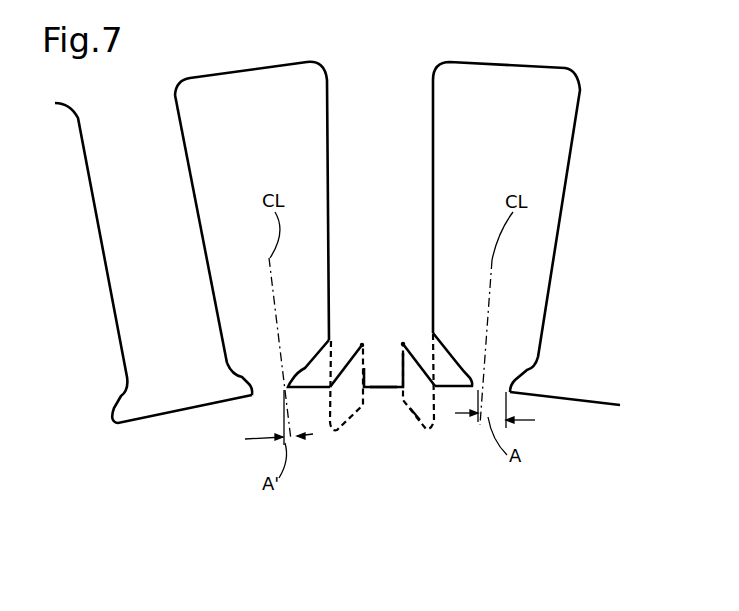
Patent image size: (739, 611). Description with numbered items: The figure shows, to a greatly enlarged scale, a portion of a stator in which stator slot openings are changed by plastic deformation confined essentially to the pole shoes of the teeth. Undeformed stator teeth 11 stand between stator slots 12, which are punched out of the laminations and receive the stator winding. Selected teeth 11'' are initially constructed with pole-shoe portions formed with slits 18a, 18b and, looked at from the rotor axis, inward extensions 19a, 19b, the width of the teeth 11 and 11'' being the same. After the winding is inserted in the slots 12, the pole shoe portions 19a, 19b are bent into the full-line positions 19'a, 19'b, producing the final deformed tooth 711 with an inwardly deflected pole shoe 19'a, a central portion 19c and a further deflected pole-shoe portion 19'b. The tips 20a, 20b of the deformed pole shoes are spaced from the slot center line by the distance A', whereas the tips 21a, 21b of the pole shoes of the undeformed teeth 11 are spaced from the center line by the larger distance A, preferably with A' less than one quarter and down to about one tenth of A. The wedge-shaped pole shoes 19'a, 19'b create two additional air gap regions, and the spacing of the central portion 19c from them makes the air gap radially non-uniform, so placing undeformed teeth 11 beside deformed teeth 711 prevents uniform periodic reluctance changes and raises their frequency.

The stator tooth 11 is at (337, 296).
The stator slot 12 is at (280, 142).
The deformed tooth 711 is at (405, 320).
The inwardly deflected pole shoe 19'a is at (306, 340).
The deflected pole-shoe portion 19'b is at (457, 338).
The tip of deformed pole shoe 20a is at (277, 380).
The tip of deformed pole shoe 20b is at (486, 374).
The tip of undeformed pole shoe 21a is at (238, 385).
The tip of undeformed pole shoe 21b is at (518, 385).
The slit 18a is at (371, 374).
The slit 18b is at (399, 358).
The inward extension 19a is at (333, 430).
The inward extension 19b is at (432, 427).
The central portion 19c is at (383, 388).
The selected tooth with pole-shoe portions 11'' is at (435, 447).